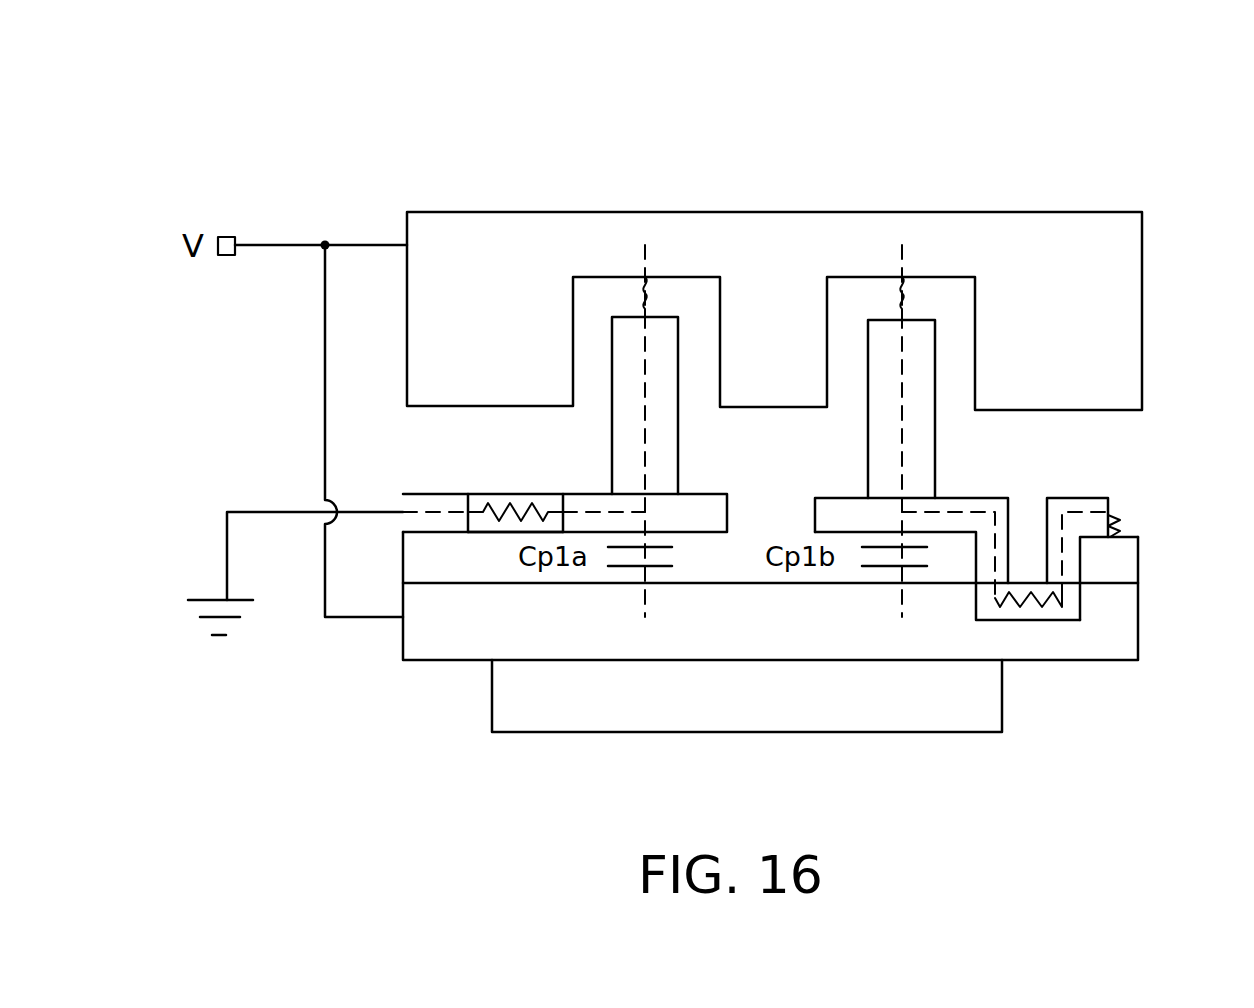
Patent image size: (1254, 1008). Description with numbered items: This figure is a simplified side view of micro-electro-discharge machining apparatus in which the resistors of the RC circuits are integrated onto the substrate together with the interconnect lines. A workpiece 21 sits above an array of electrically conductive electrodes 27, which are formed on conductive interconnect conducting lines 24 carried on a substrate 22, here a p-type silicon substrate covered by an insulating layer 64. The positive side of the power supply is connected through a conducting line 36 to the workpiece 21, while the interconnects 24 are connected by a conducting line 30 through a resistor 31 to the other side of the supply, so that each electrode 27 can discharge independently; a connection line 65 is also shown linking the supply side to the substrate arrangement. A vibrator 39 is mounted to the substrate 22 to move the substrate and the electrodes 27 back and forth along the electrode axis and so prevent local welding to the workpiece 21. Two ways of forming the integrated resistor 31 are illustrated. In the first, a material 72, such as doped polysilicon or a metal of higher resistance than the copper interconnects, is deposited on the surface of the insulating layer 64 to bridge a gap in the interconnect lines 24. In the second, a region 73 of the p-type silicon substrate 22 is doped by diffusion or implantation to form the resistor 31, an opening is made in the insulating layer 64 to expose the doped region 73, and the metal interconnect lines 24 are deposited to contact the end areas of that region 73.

The workpiece 21 is at (1052, 213).
The substrate 22 is at (1140, 634).
The interconnect conducting lines 24 is at (430, 493).
The electrodes 27 is at (868, 423).
The conducting line 30 is at (270, 511).
The resistor 31 is at (520, 494).
The conducting line 36 is at (288, 244).
The vibrator 39 is at (612, 733).
The insulating layer 64 is at (1138, 572).
The conductor 65 is at (324, 372).
The material 72 is at (488, 531).
The region 73 is at (1020, 622).